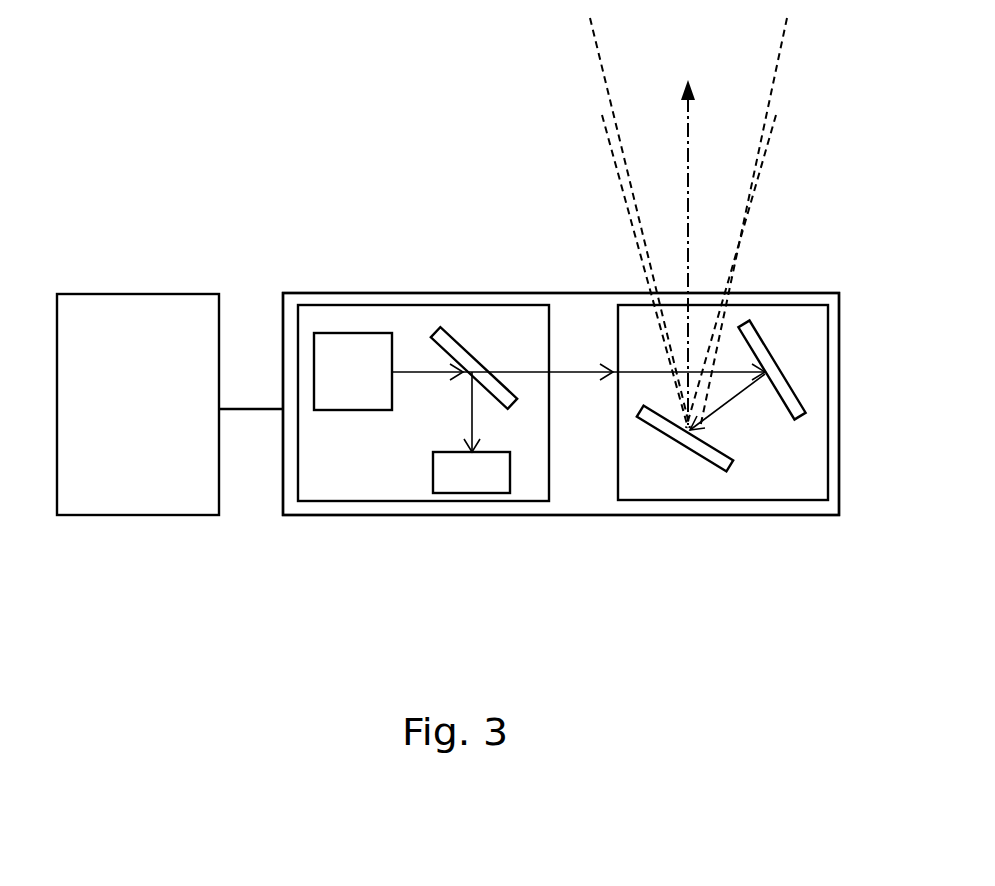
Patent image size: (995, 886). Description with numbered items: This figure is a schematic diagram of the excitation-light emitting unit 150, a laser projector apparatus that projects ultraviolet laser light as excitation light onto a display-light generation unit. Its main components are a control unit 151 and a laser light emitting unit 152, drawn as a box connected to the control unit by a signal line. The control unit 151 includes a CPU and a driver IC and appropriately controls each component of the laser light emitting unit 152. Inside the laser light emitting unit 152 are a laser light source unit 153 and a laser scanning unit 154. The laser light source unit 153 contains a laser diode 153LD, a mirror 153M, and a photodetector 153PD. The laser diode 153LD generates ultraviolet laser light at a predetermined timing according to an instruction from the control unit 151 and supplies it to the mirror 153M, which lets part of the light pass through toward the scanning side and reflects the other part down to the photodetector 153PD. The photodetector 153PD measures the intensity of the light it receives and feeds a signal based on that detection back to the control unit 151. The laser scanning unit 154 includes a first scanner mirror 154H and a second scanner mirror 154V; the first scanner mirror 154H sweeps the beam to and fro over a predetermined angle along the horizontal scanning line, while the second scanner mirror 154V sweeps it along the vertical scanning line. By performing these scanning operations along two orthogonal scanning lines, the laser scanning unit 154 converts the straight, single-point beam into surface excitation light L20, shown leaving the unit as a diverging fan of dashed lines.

The excitation-light emitting unit 150 is at (313, 218).
The control unit 151 is at (145, 293).
The laser light emitting unit 152 is at (413, 292).
The laser light source unit 153 is at (371, 502).
The laser diode 153LD is at (333, 411).
The mirror 153M is at (452, 328).
The photodetector 153PD is at (470, 494).
The laser scanning unit 154 is at (640, 501).
The first scanner mirror 154H is at (703, 460).
The second scanner mirror 154V is at (791, 421).
The excitation light L20 is at (600, 170).